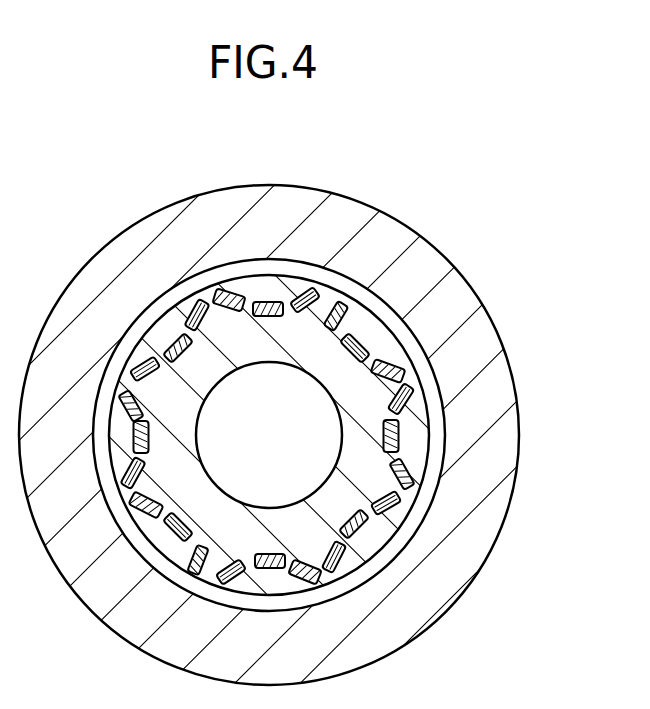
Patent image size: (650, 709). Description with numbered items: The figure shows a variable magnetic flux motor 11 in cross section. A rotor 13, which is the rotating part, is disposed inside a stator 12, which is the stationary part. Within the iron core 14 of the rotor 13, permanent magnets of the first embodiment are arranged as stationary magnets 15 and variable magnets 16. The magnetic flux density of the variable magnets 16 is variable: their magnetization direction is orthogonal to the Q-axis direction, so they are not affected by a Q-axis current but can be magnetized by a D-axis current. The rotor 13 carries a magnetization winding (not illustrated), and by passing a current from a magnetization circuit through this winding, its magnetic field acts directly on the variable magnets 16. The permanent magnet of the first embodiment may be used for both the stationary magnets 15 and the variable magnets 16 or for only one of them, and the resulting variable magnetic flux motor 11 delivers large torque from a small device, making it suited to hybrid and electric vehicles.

The variable magnetic flux motor 11 is at (461, 184).
The stator 12 is at (505, 517).
The rotor 13 is at (495, 238).
The iron core 14 is at (383, 352).
The stationary magnets 15 is at (420, 372).
The variable magnets 16 is at (400, 423).